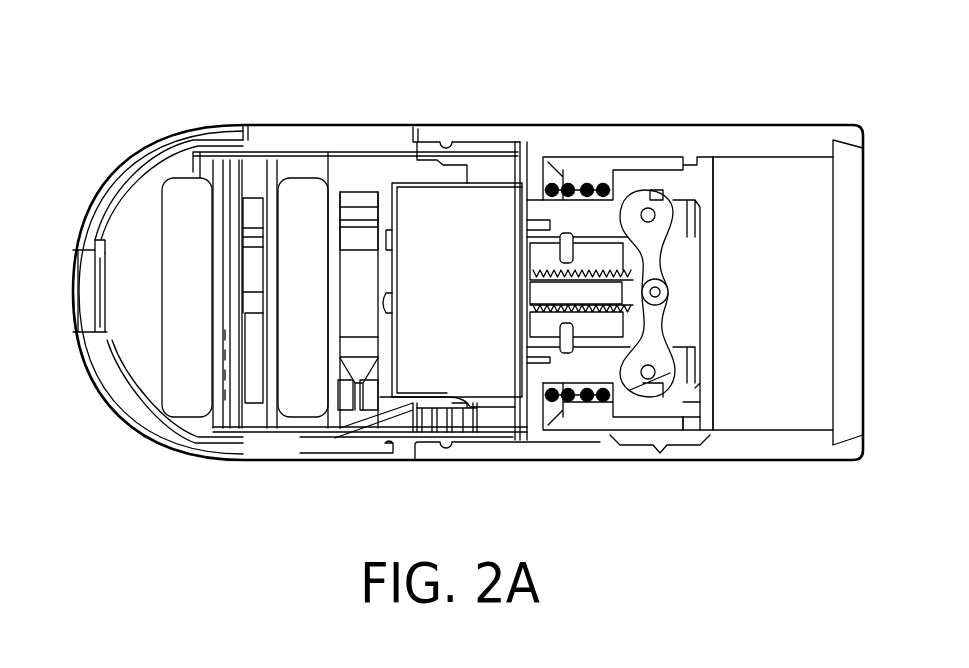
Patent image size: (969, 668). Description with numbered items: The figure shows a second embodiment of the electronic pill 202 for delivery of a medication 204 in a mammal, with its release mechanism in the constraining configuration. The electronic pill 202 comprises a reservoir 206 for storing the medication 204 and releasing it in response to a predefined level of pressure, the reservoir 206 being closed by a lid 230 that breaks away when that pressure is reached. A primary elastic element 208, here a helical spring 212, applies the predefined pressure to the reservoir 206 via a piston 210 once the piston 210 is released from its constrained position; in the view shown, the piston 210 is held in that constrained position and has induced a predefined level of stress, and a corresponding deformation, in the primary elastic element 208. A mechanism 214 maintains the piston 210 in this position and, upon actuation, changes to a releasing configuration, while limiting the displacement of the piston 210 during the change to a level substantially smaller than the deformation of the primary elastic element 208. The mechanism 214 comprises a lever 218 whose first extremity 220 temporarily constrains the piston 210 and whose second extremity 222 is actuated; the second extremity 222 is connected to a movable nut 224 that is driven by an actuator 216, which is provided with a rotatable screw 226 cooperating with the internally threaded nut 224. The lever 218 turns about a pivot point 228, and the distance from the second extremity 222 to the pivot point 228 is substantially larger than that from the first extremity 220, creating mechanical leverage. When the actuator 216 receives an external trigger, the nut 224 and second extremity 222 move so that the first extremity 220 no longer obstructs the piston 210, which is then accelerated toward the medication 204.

The electronic pill 202 is at (134, 100).
The medication 204 is at (780, 387).
The reservoir 206 is at (770, 157).
The primary elastic element 208 is at (553, 187).
The piston 210 is at (707, 393).
The helical spring 212 is at (553, 190).
The mechanism 214 is at (640, 448).
The actuator 216 is at (422, 207).
The lever 218 is at (655, 250).
The first extremity 220 is at (636, 207).
The second extremity 222 is at (668, 290).
The movable nut 224 is at (600, 256).
The rotatable screw 226 is at (575, 307).
The pivot point 228 is at (656, 214).
The lid 230 is at (847, 157).